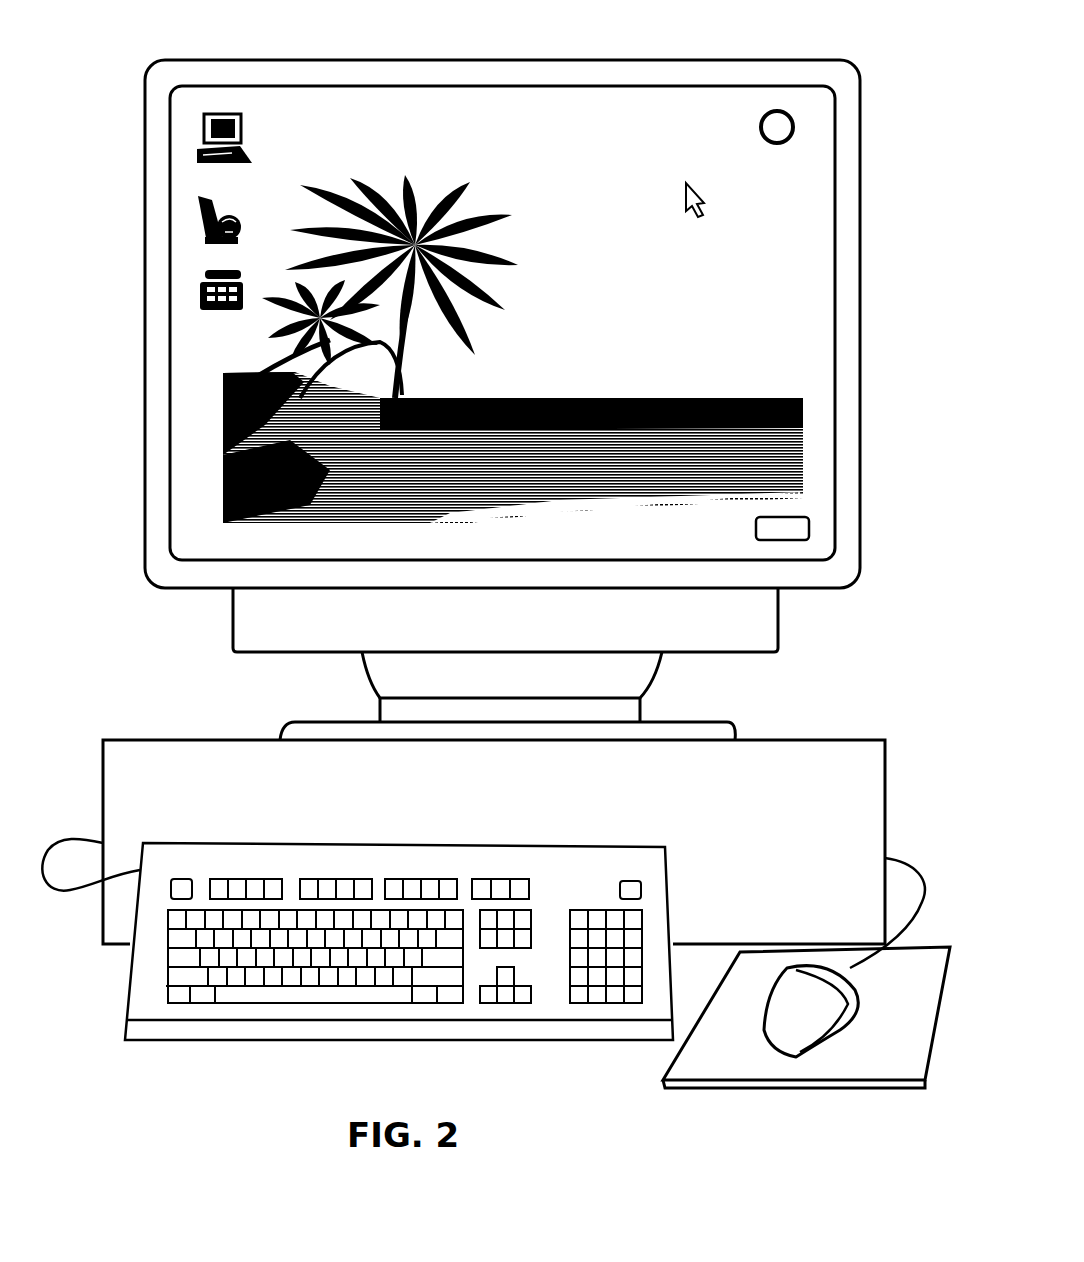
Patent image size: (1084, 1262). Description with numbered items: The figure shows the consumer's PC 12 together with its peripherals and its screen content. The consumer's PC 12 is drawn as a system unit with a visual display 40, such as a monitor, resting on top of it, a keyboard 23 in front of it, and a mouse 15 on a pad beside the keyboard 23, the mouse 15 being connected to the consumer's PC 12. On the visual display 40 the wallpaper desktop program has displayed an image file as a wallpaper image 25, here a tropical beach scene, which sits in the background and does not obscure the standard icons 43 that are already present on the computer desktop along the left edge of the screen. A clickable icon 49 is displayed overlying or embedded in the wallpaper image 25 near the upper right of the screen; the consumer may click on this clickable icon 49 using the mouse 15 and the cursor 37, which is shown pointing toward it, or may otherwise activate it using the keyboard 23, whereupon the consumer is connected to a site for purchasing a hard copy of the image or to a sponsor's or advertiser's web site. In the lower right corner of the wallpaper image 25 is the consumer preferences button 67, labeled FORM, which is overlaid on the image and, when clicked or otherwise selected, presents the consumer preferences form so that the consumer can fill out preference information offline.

The consumer's PC 12 is at (848, 737).
The mouse 15 is at (812, 1052).
The keyboard 23 is at (297, 1040).
The wallpaper image 25 is at (805, 445).
The cursor 37 is at (700, 201).
The visual display 40 is at (467, 87).
The standard icons 43 is at (200, 137).
The clickable icon 49 is at (771, 112).
The consumer preferences button 67 is at (810, 528).